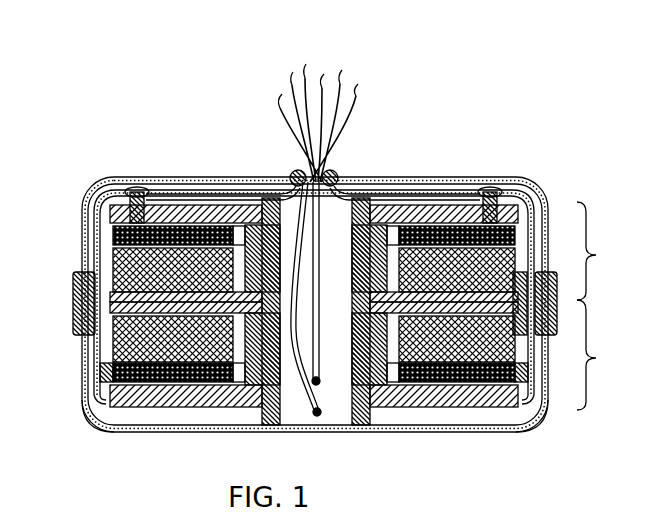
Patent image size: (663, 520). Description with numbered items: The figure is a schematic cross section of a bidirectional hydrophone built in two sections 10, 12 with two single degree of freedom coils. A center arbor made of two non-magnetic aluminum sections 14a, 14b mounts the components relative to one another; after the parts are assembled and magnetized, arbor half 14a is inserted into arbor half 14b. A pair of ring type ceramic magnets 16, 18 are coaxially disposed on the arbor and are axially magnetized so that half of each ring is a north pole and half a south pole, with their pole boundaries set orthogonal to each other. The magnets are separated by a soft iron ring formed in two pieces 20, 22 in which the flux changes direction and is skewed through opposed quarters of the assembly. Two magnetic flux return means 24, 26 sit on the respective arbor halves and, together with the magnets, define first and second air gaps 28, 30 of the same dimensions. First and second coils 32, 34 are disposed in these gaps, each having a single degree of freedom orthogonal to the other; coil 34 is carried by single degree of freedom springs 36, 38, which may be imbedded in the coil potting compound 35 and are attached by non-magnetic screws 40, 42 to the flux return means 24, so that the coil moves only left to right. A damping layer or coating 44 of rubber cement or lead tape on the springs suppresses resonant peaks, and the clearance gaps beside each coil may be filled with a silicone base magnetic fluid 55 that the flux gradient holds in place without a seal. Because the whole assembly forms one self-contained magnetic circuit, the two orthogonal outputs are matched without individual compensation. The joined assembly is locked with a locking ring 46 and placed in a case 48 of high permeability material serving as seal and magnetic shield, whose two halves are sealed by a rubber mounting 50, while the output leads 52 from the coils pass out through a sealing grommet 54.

The hydrophone section 10 is at (603, 251).
The hydrophone section 12 is at (603, 355).
The center arbor section 14a is at (350, 258).
The center arbor section 14b is at (355, 330).
The ring type ceramic magnet 16 is at (535, 228).
The ring type ceramic magnet 18 is at (525, 422).
The soft iron ring piece 20 is at (540, 304).
The soft iron ring piece 22 is at (495, 338).
The magnetic flux return means 24 is at (448, 205).
The magnetic flux return means 26 is at (420, 407).
The first air gap 28 is at (385, 205).
The second air gap 30 is at (387, 420).
The first coil 32 is at (520, 197).
The second coil 34 is at (484, 407).
The coil potting compound 35 is at (100, 395).
The single degree of freedom spring 36 is at (545, 257).
The single degree of freedom spring 38 is at (88, 243).
The non-magnetic screw 40 is at (498, 188).
The non-magnetic screw 42 is at (140, 188).
The damping layer or coating 44 is at (83, 212).
The locking ring 46 is at (100, 350).
The case 48 is at (106, 425).
The rubber mounting 50 is at (73, 303).
The output leads 52 is at (318, 118).
The sealing grommet 54 is at (330, 172).
The silicone base magnetic fluid 55 is at (185, 395).